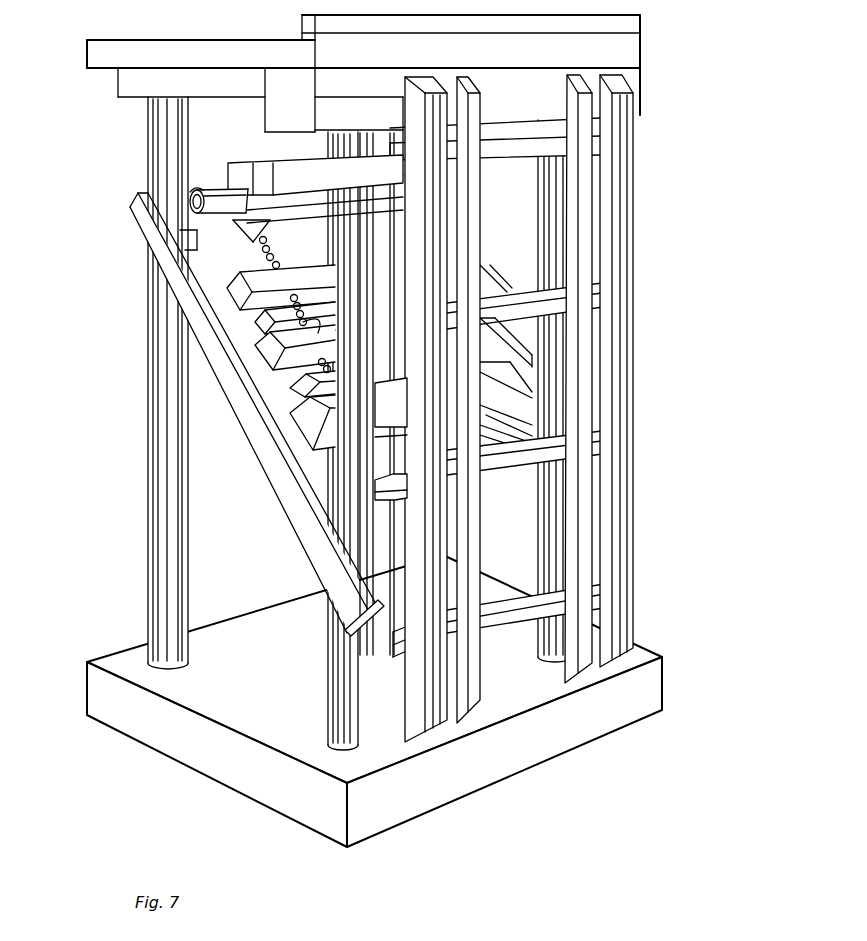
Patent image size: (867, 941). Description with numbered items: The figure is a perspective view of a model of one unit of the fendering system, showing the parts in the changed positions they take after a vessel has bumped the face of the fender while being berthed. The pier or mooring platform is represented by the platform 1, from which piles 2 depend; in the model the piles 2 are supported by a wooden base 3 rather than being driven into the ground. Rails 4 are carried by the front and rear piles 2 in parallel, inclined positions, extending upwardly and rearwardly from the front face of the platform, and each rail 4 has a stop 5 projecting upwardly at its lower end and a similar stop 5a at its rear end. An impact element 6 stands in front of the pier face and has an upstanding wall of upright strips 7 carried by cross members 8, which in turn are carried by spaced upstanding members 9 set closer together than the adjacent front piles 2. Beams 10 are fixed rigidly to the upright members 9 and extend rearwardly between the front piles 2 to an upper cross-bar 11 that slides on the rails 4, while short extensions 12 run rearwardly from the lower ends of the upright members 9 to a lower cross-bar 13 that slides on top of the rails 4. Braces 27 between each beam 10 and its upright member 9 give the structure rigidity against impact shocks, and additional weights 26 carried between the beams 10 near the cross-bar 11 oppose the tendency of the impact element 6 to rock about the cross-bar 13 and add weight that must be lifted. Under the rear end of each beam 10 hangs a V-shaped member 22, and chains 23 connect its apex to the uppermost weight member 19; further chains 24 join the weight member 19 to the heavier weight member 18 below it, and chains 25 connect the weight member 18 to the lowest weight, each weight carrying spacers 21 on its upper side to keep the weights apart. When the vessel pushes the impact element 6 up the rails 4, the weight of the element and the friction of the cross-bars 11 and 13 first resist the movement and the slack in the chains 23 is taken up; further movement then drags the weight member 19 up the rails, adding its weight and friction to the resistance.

The platform 1 is at (183, 50).
The piles 2 is at (152, 115).
The wooden base 3 is at (188, 690).
The rails 4 is at (145, 210).
The stop 5 is at (327, 620).
The stop 5a is at (195, 191).
The impact element 6 is at (648, 302).
The upright strips 7 is at (587, 128).
The cross members 8 is at (397, 158).
The upstanding members 9 is at (535, 562).
The beams 10 is at (387, 210).
The cross-bar 11 is at (213, 195).
The short extensions 12 is at (307, 422).
The cross-bar 13 is at (395, 477).
The weight member 18 is at (270, 350).
The weight member 19 is at (233, 293).
The spacer 21 is at (257, 327).
The V-shaped member 22 is at (250, 238).
The chains 23 is at (262, 258).
The chains 24 is at (318, 333).
The chains 25 is at (287, 378).
The weights 26 is at (263, 173).
The braces 27 is at (532, 340).